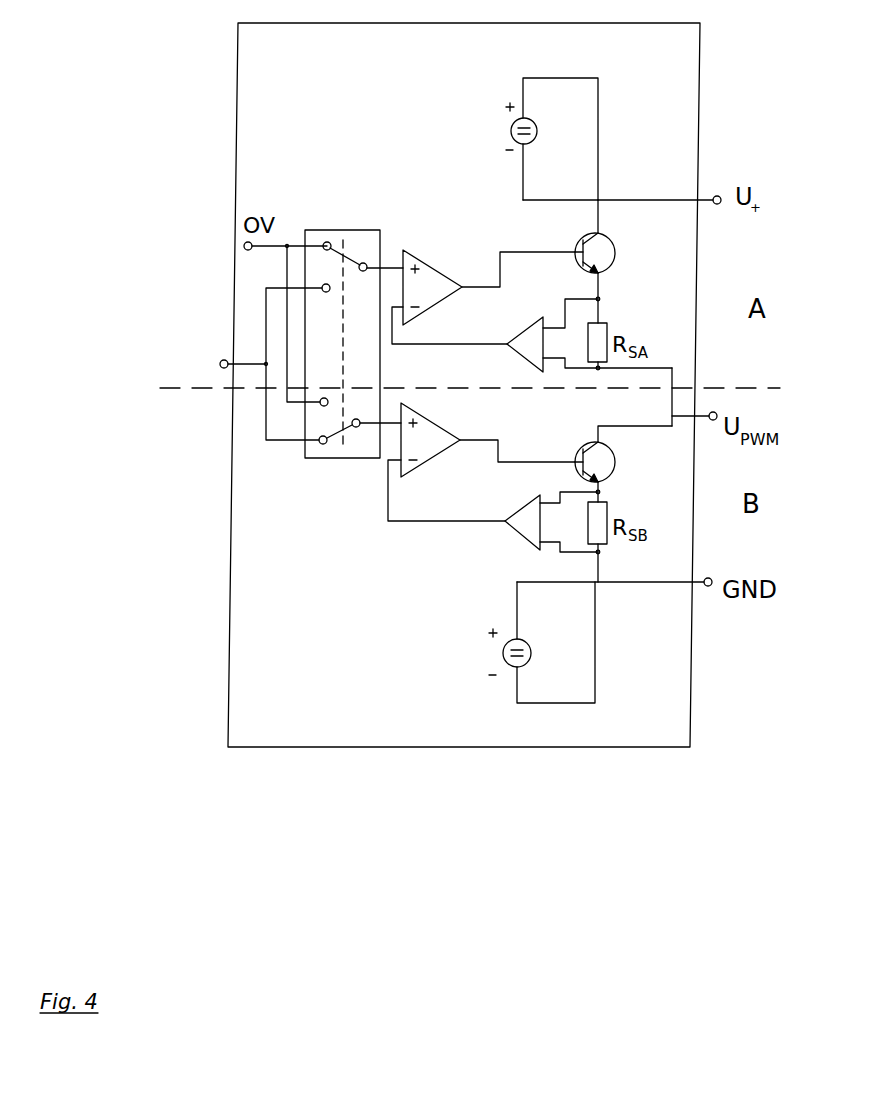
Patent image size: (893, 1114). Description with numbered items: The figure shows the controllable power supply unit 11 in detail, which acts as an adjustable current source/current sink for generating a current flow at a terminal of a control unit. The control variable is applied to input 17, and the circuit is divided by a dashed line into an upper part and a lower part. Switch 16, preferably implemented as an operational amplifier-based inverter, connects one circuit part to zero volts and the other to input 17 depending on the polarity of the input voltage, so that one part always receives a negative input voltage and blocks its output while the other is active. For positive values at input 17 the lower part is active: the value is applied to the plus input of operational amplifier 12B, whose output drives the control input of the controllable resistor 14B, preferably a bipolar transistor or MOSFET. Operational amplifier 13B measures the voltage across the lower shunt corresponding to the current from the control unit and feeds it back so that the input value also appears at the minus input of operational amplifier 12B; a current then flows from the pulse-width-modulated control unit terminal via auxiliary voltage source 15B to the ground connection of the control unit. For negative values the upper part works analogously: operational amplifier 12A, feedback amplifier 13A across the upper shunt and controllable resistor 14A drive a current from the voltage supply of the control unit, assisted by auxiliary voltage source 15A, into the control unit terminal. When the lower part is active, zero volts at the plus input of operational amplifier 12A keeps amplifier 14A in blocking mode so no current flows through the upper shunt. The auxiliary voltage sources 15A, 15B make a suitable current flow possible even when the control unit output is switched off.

The controllable power supply unit 11 is at (295, 725).
The operational amplifier 12A is at (455, 252).
The operational amplifier 12B is at (440, 432).
The operational amplifier 13A is at (528, 342).
The operational amplifier 13B is at (518, 526).
The amplifier 14A is at (604, 254).
The controllable current limiter/resistor 14B is at (612, 460).
The auxiliary voltage source 15A is at (511, 131).
The auxiliary voltage source 15B is at (503, 654).
The switch 16 is at (350, 450).
The input 17 is at (222, 362).